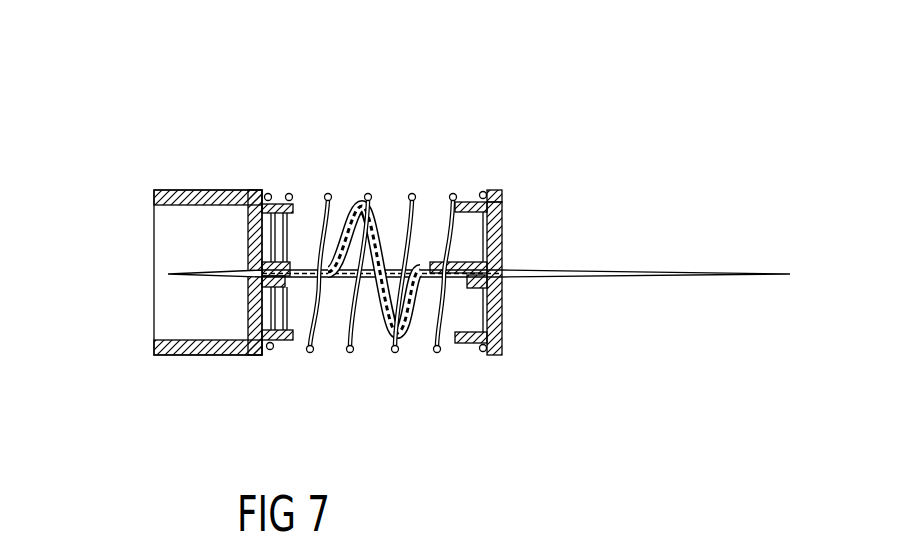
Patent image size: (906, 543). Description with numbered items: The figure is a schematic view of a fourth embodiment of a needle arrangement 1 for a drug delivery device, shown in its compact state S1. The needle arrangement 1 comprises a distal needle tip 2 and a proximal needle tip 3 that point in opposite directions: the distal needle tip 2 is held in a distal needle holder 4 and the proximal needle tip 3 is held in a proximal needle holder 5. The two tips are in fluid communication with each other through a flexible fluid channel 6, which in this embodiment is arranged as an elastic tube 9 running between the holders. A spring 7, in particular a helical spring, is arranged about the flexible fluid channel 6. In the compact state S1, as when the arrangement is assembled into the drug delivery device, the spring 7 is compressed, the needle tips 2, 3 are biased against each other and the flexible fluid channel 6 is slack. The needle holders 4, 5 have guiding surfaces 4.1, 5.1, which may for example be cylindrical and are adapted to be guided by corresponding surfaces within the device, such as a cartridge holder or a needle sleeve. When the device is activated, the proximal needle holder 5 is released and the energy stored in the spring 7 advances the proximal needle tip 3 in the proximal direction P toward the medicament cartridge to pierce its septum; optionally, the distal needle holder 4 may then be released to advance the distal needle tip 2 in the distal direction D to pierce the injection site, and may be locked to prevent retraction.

The needle arrangement 1 is at (210, 122).
The compact state S1 is at (142, 166).
The distal needle tip 2 is at (762, 272).
The proximal needle tip 3 is at (168, 276).
The distal needle holder 4 is at (498, 303).
The guiding surface 4.1 is at (493, 188).
The proximal needle holder 5 is at (255, 320).
The guiding surface 5.1 is at (230, 190).
The flexible fluid channel 6 is at (378, 335).
The spring 7 is at (411, 192).
The elastic tube 9 is at (374, 269).
The proximal direction P is at (88, 281).
The distal direction D is at (823, 276).